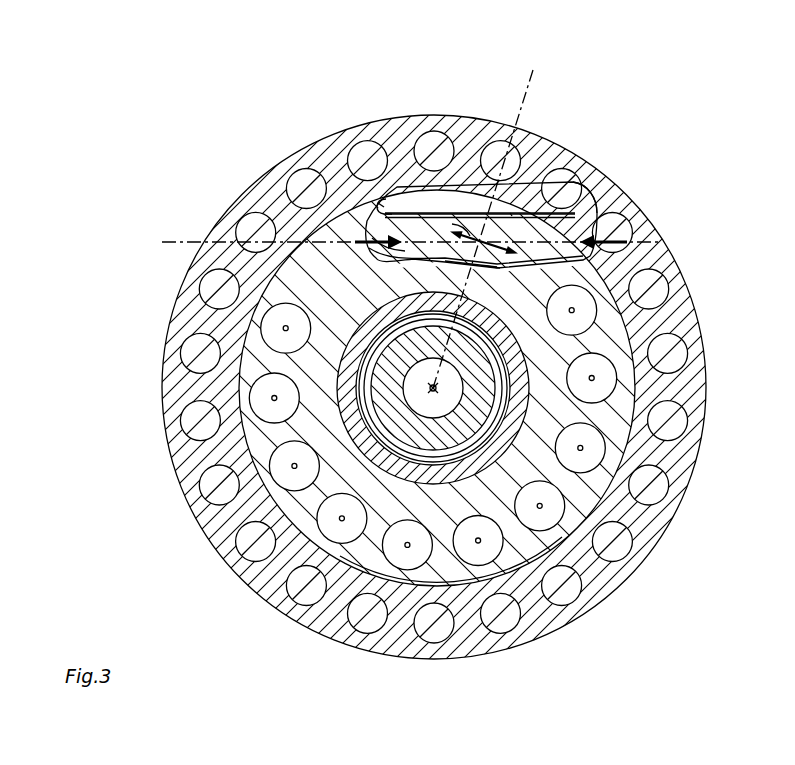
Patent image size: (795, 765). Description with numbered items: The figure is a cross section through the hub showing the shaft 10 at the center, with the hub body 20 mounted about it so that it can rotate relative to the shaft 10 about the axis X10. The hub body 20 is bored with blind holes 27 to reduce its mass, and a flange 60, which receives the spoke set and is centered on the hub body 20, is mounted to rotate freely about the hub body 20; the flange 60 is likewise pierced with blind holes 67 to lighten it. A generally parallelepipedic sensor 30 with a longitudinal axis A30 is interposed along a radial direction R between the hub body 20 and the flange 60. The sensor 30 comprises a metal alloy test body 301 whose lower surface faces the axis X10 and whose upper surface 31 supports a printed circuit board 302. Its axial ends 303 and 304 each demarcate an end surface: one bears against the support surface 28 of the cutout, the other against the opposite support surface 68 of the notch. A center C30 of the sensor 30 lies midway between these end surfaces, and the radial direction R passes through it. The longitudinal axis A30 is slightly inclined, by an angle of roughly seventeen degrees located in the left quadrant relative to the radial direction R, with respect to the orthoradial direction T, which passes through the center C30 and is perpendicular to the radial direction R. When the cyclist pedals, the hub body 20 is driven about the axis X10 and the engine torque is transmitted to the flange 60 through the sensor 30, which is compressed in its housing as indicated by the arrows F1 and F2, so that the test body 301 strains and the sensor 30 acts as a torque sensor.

The shaft 10 is at (388, 362).
The hub body 20 is at (612, 342).
The blind holes 27 is at (335, 527).
The support surface 28 is at (405, 251).
The sensor 30 is at (698, 98).
The upper surface 31 is at (378, 203).
The flange 60 is at (676, 458).
The blind holes 67 is at (436, 142).
The support surface 68 is at (493, 268).
The test body 301 is at (560, 186).
The printed circuit board 302 is at (552, 190).
The axial end 303 is at (376, 201).
The axial end 304 is at (596, 212).
The axis X10 is at (438, 398).
The longitudinal axis A30 is at (660, 242).
The radial direction R is at (488, 215).
The center C30 is at (510, 213).
The arrow F1 is at (369, 232).
The arrow F2 is at (603, 232).
The orthoradial direction T is at (484, 240).